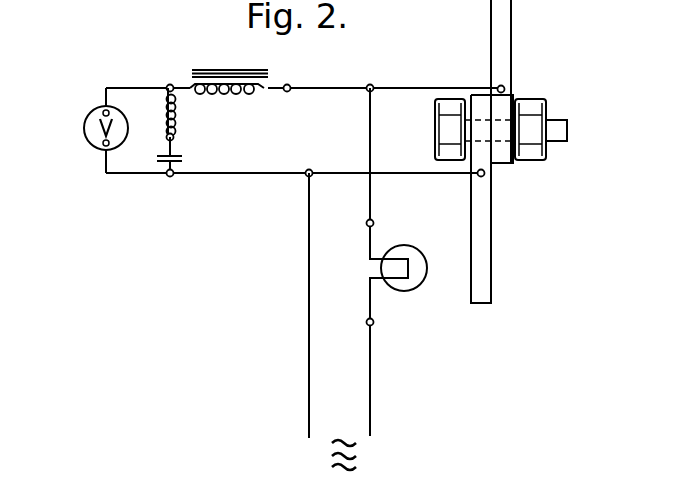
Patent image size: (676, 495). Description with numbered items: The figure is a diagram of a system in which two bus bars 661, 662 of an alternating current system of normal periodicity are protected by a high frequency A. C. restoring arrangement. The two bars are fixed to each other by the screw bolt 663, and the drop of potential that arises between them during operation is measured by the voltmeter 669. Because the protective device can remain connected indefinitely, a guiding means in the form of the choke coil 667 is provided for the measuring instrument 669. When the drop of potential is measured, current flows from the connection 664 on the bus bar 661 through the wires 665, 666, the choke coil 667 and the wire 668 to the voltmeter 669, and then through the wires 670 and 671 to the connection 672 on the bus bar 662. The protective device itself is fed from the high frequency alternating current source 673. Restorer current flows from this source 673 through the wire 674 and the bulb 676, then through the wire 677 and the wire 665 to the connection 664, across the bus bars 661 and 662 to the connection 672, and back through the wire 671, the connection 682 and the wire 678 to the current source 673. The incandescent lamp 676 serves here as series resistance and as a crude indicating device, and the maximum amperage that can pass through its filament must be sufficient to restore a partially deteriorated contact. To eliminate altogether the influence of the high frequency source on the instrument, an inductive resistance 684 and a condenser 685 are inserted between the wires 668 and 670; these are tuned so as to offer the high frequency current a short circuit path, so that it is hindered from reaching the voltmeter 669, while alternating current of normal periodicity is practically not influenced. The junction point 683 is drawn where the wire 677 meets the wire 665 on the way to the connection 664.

The bus bar 661 is at (512, 15).
The bus bar 662 is at (492, 270).
The screw bolt 663 is at (567, 130).
The connection 664 is at (506, 90).
The wire 665 is at (437, 87).
The wire 666 is at (325, 87).
The choke coil 667 is at (228, 68).
The wire 668 is at (134, 85).
The voltmeter 669 is at (82, 126).
The wire 670 is at (233, 183).
The wire 671 is at (404, 171).
The connection 672 is at (485, 177).
The high frequency alternating current source 673 is at (345, 478).
The wire 674 is at (373, 409).
The bulb 676 is at (415, 296).
The wire 677 is at (374, 195).
The wire 678 is at (305, 262).
The connection 682 is at (311, 166).
The junction 683 is at (374, 93).
The inductive resistance 684 is at (180, 118).
The condenser 685 is at (185, 158).